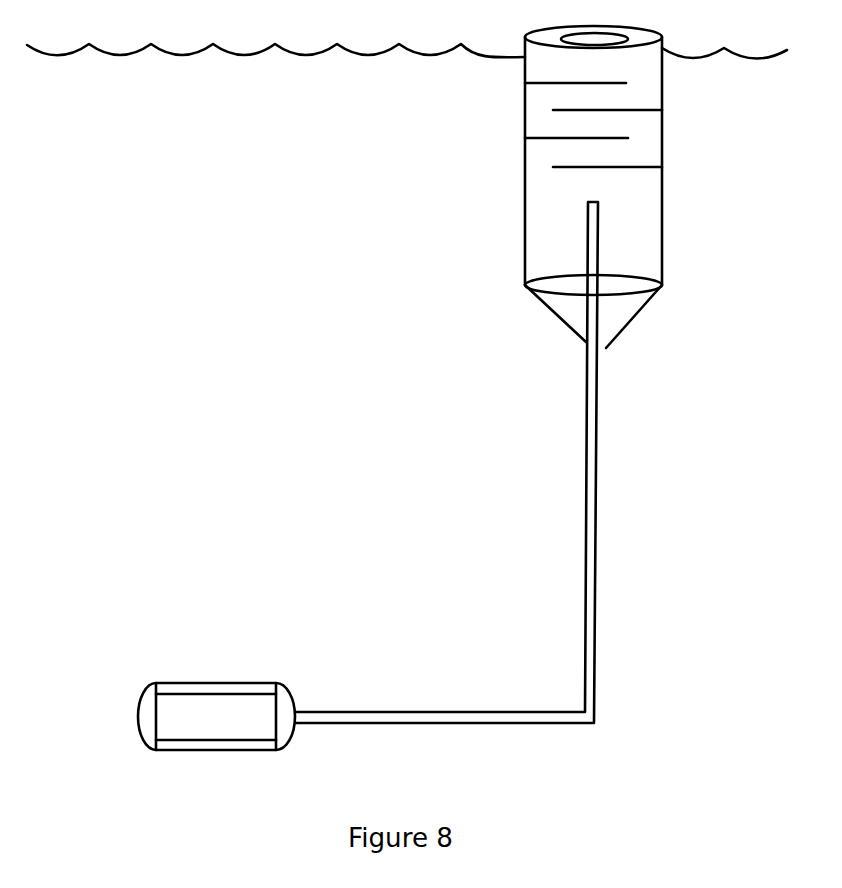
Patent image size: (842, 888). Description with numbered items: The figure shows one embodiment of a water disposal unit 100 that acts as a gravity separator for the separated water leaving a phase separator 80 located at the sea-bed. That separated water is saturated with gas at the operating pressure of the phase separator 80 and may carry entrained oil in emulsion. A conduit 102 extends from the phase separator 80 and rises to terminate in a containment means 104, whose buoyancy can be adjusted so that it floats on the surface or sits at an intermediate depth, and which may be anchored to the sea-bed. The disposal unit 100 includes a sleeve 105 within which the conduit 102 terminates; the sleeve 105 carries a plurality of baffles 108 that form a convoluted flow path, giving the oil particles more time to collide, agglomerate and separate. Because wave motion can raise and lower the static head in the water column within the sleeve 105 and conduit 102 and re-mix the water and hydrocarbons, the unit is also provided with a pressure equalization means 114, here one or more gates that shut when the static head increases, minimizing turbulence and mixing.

The phase separator 80 is at (220, 683).
The water disposal unit 100 is at (401, 219).
The conduit 102 is at (595, 695).
The containment means 104 is at (662, 213).
The sleeve 105 is at (593, 160).
The baffles 108 is at (635, 125).
The pressure equalization means 114 is at (625, 328).